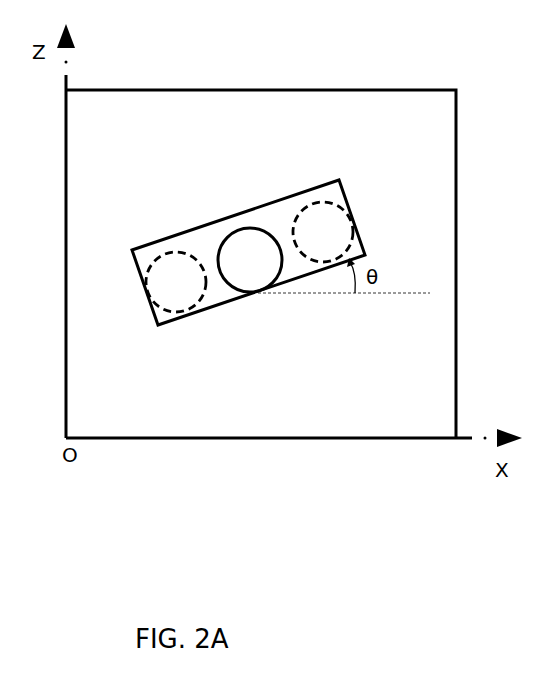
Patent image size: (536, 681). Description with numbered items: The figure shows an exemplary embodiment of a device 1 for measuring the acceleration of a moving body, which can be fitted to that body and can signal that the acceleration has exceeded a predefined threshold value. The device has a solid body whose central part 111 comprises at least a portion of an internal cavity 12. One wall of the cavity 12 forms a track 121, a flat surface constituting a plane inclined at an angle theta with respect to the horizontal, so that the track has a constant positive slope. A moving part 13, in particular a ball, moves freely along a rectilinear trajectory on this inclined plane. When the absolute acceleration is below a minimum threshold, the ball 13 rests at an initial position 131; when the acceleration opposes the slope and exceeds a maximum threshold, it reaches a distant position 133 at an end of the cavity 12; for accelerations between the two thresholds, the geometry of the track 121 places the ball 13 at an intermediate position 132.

The device for measuring the acceleration of a moving body 1 is at (478, 247).
The central part 111 is at (261, 264).
The internal cavity 12 is at (215, 328).
The moving part 13 is at (255, 280).
The track 121 is at (172, 332).
The initial position 131 is at (169, 230).
The intermediate position 132 is at (240, 202).
The distant position 133 is at (314, 172).